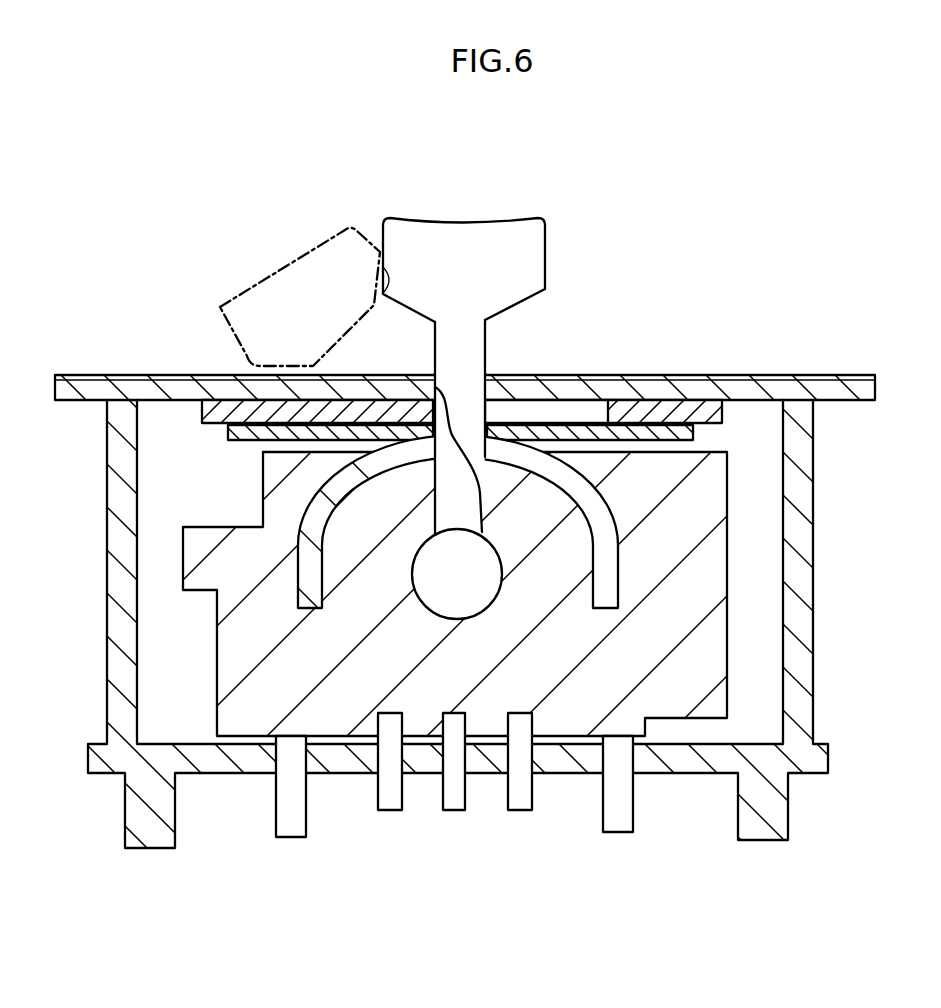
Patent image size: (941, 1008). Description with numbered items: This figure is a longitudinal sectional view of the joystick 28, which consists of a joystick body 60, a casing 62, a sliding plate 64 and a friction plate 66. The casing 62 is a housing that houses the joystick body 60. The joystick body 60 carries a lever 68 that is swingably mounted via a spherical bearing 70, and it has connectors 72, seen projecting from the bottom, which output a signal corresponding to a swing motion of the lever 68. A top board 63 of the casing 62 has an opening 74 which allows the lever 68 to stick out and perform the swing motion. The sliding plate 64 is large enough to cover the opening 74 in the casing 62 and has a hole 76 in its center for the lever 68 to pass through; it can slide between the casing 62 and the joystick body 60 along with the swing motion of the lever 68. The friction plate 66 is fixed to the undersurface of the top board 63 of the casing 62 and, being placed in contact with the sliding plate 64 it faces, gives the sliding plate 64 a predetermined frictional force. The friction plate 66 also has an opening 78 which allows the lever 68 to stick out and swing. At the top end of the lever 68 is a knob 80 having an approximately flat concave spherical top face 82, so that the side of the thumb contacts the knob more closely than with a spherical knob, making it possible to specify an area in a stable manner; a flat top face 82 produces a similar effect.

The joystick 28 is at (470, 519).
The joystick body 60 is at (700, 598).
The casing 62 is at (826, 474).
The top board 63 is at (713, 375).
The sliding plate 64 is at (650, 437).
The friction plate 66 is at (660, 413).
The lever 68 is at (487, 347).
The spherical bearing 70 is at (475, 593).
The connectors 72 is at (290, 833).
The opening 74 is at (365, 465).
The hole 76 is at (415, 408).
The opening 78 is at (606, 404).
The knob 80 is at (340, 268).
The top face 82 is at (290, 262).